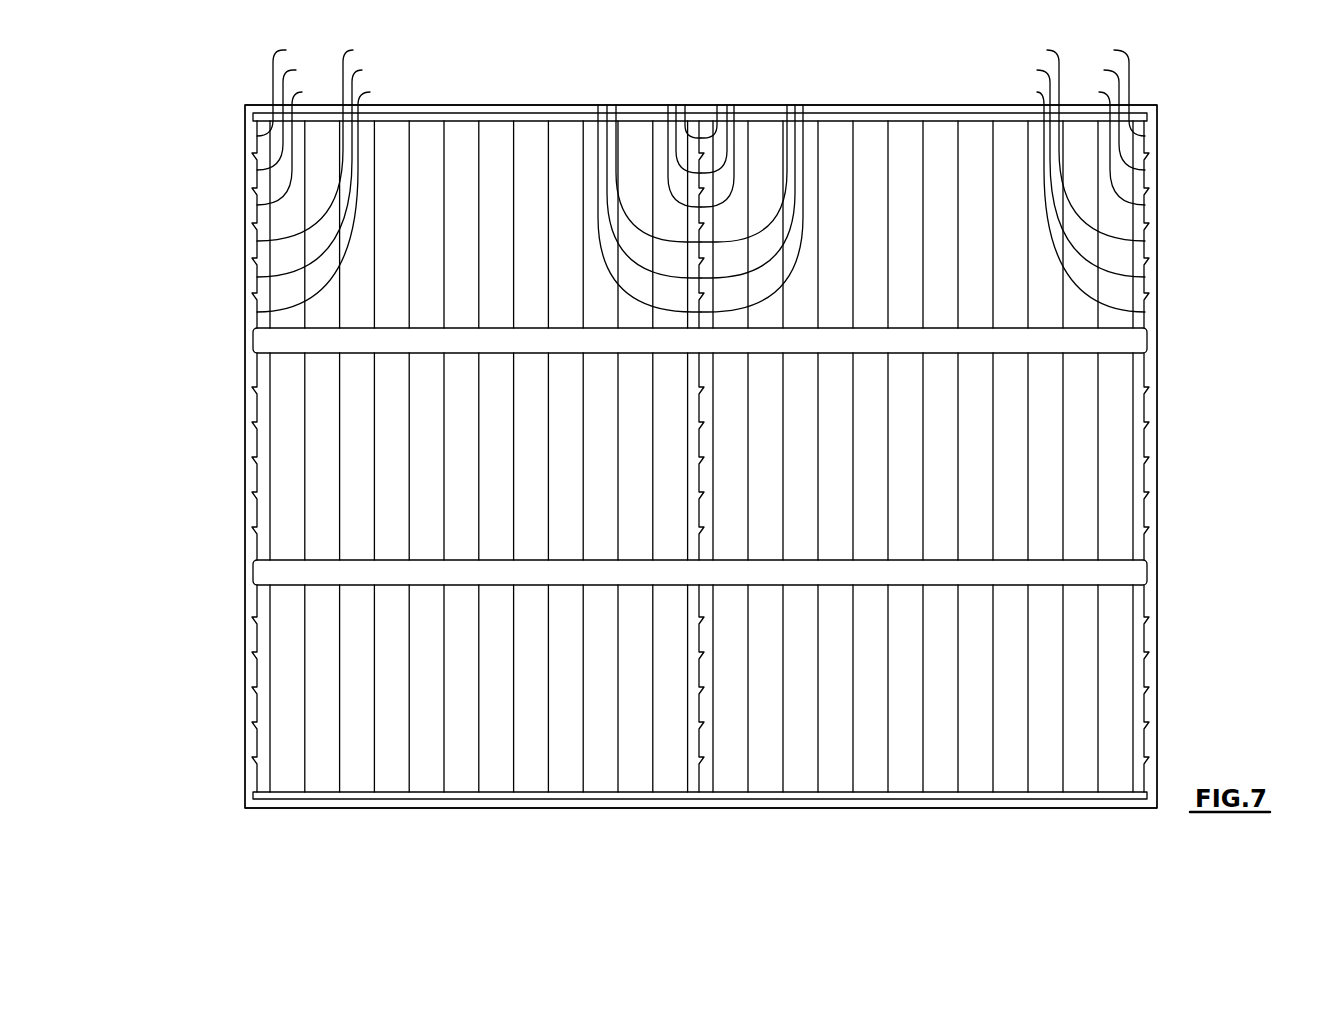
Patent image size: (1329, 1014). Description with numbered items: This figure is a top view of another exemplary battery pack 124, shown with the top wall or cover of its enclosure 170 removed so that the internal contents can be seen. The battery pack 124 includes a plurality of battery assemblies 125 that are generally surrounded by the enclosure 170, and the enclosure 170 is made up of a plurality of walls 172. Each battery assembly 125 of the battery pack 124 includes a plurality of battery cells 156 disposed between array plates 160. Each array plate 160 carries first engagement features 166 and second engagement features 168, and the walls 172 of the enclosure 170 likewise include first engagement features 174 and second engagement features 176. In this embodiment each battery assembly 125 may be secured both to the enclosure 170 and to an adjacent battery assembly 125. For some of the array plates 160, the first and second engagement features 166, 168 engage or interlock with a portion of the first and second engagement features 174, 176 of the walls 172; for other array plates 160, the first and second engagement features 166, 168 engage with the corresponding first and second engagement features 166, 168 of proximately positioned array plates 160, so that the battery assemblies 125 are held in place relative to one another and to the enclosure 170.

The battery pack 124 is at (862, 80).
The battery assembly 125 is at (423, 133).
The battery cell 156 is at (558, 145).
The array plate 160 is at (260, 112).
The first engagement feature 166 is at (807, 70).
The second engagement feature 168 is at (811, 92).
The enclosure 170 is at (896, 104).
The wall 172 is at (550, 103).
The first engagement feature 174 is at (252, 170).
The second engagement feature 176 is at (252, 136).